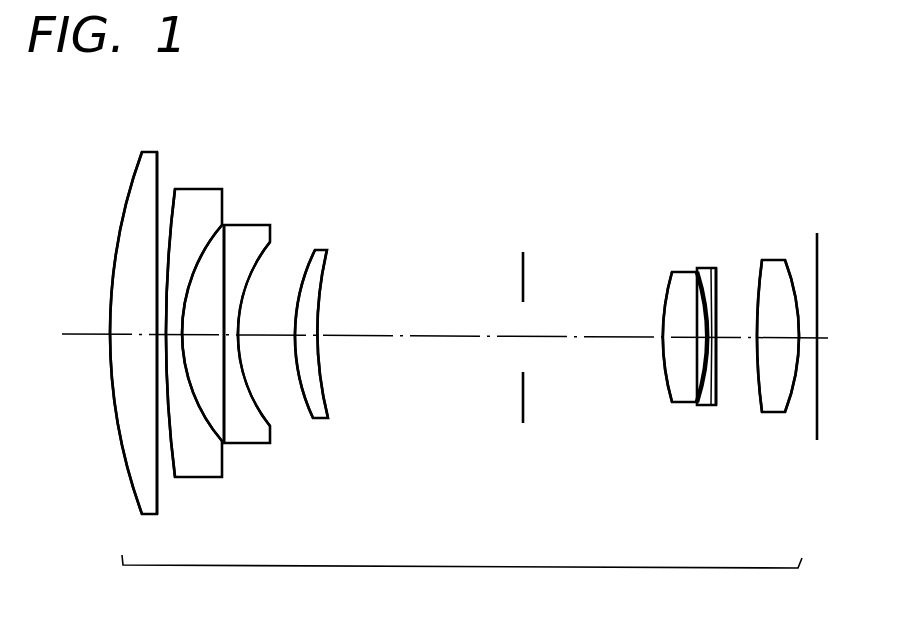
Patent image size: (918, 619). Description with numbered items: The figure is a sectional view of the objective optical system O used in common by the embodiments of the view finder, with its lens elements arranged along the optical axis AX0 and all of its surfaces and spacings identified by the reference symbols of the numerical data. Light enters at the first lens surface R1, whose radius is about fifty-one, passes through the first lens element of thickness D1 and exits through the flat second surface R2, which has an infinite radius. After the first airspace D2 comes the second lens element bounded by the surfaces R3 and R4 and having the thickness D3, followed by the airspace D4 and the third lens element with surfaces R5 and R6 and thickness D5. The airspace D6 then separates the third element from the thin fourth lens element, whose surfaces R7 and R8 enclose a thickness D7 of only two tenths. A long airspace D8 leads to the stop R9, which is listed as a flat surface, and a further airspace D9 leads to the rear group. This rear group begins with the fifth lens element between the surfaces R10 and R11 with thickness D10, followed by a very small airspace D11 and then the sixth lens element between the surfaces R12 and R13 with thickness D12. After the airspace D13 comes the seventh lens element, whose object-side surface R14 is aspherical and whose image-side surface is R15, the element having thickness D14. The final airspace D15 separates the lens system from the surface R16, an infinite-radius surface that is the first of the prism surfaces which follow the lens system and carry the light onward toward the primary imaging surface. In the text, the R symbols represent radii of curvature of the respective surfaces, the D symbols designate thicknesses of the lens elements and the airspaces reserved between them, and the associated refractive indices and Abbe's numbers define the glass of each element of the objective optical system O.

The first lens surface radius of curvature R1 is at (137, 176).
The second lens surface radius of curvature R2 is at (157, 177).
The third lens surface radius of curvature R3 is at (176, 211).
The fourth lens surface radius of curvature R4 is at (220, 243).
The fifth lens surface radius of curvature R5 is at (226, 243).
The sixth lens surface radius of curvature R6 is at (264, 254).
The seventh lens surface radius of curvature R7 is at (311, 268).
The eighth lens surface radius of curvature R8 is at (324, 277).
The stop R9 is at (522, 275).
The tenth lens surface radius of curvature R10 is at (667, 292).
The eleventh lens surface radius of curvature R11 is at (694, 290).
The twelfth lens surface radius of curvature R12 is at (703, 298).
The thirteenth lens surface radius of curvature R13 is at (718, 300).
The fourteenth lens surface radius of curvature R14 is at (761, 282).
The fifteenth lens surface radius of curvature R15 is at (795, 300).
The sixteenth surface radius of curvature R16 is at (817, 263).
The first lens element thickness D1 is at (125, 337).
The first airspace D2 is at (160, 334).
The second lens element thickness D3 is at (176, 337).
The second airspace D4 is at (205, 337).
The third lens element thickness D5 is at (233, 337).
The third airspace D6 is at (263, 337).
The fourth lens element thickness D7 is at (305, 337).
The airspace before the stop D8 is at (398, 337).
The airspace after the stop D9 is at (575, 338).
The fifth lens element thickness D10 is at (677, 338).
The airspace between fifth and sixth lens elements D11 is at (700, 338).
The sixth lens element thickness D12 is at (708, 407).
The airspace between sixth and seventh lens elements D13 is at (730, 338).
The seventh lens element thickness D14 is at (773, 338).
The airspace between seventh lens element and prism D15 is at (807, 338).
The optical axis AX0 is at (428, 337).
The objective optical system O is at (462, 579).